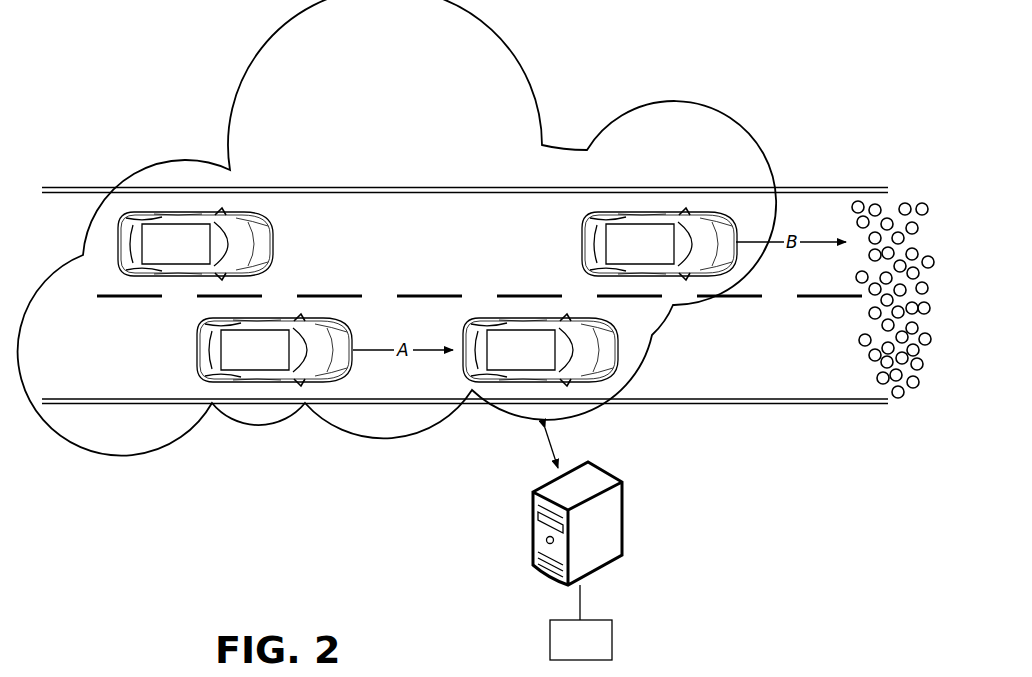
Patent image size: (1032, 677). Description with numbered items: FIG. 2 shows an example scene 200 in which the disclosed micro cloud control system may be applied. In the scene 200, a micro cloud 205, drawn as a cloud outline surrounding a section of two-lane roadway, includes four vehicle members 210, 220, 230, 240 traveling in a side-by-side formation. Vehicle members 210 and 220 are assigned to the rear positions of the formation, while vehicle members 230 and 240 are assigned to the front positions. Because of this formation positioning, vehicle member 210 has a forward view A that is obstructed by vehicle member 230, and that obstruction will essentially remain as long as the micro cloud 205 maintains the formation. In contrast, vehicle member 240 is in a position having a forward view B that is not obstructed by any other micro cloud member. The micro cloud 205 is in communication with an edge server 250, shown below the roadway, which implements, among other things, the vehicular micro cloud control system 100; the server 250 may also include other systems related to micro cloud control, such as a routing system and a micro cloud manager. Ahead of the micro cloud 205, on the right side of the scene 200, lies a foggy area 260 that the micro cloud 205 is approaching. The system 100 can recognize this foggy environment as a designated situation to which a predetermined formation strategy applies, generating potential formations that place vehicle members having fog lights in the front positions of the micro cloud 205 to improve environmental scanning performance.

The vehicular micro cloud control system 100 is at (581, 622).
The example scene 200 is at (468, 622).
The micro cloud 205 is at (530, 98).
The vehicle member 210 is at (197, 352).
The vehicle member 220 is at (243, 212).
The vehicle member 230 is at (493, 317).
The vehicle member 240 is at (643, 212).
The edge server 250 is at (623, 518).
The foggy area 260 is at (890, 210).